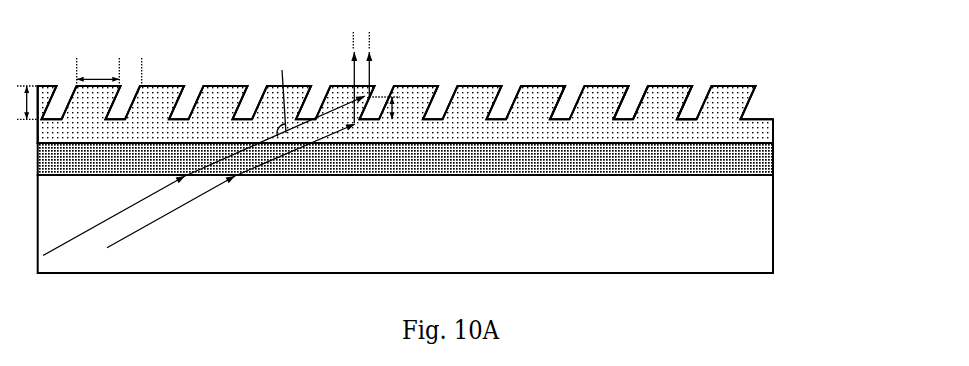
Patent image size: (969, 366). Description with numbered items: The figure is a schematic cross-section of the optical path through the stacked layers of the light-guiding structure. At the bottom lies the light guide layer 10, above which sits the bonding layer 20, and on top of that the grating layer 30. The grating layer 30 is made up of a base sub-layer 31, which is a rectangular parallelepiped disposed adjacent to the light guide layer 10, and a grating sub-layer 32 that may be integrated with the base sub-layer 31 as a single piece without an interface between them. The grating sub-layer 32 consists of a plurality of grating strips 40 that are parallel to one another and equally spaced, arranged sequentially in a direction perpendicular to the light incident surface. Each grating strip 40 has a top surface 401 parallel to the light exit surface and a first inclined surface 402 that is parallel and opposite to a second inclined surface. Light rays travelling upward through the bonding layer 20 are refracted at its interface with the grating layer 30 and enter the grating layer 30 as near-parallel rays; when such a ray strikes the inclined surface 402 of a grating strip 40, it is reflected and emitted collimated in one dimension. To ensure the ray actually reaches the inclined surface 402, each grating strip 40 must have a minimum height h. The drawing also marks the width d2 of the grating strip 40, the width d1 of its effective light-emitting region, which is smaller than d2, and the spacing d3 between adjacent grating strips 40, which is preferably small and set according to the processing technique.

The light guide layer 10 is at (773, 222).
The bonding layer 20 is at (768, 162).
The grating layer 30 is at (463, 118).
The base sub-layer 31 is at (440, 135).
The grating sub-layer 32 is at (748, 103).
The grating strip 40 is at (678, 88).
The top surface 401 is at (598, 85).
The first inclined surface 402 is at (626, 92).
The width of the effective light-emitting region d1 is at (386, 62).
The width of the grating strip d2 is at (98, 66).
The spacing between adjacent grating strips d3 is at (145, 56).
The minimum height h is at (215, 104).